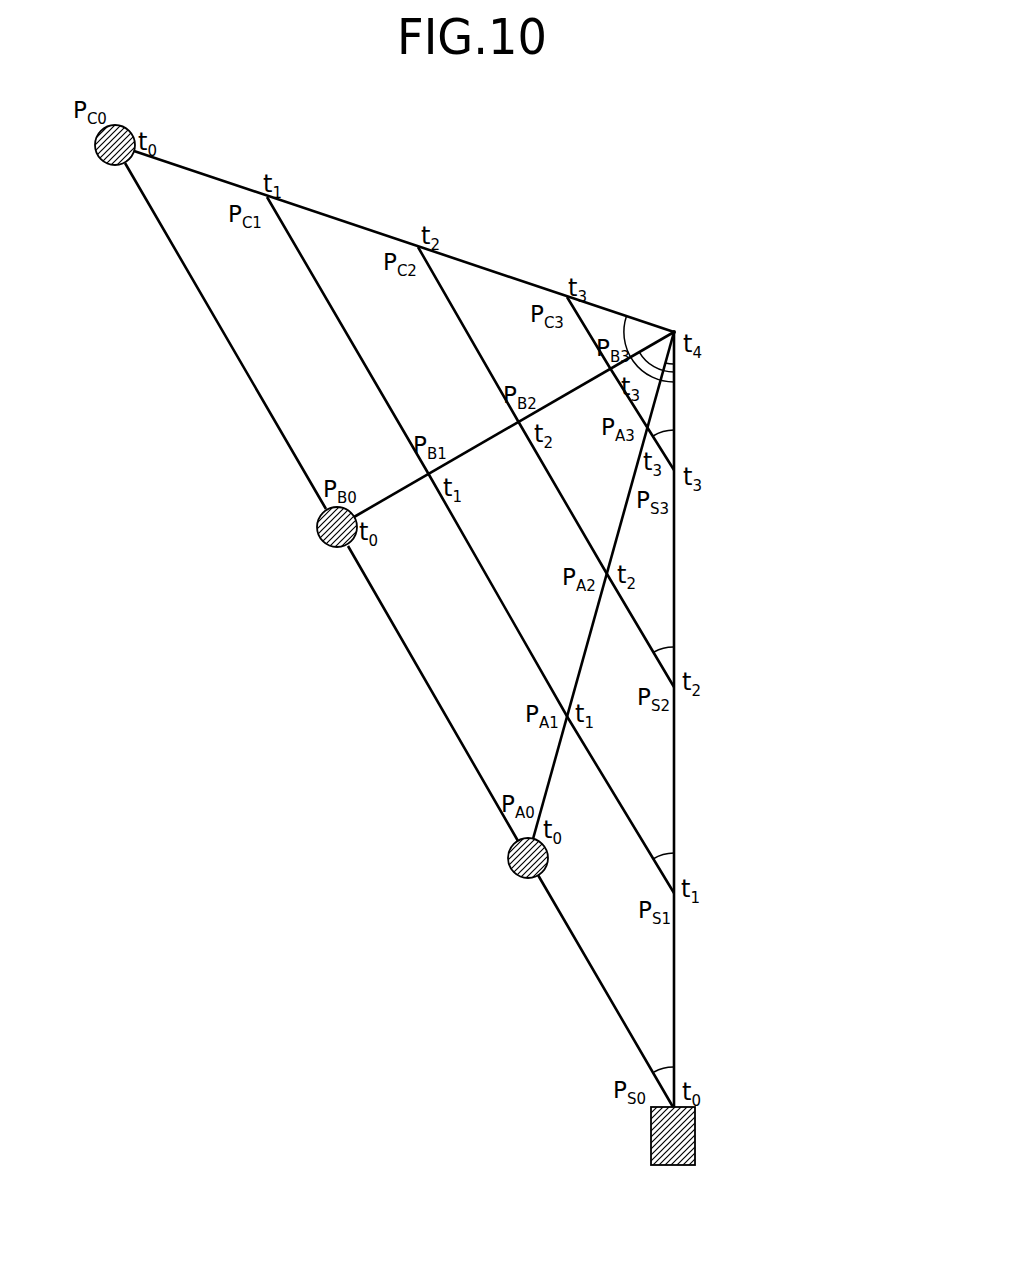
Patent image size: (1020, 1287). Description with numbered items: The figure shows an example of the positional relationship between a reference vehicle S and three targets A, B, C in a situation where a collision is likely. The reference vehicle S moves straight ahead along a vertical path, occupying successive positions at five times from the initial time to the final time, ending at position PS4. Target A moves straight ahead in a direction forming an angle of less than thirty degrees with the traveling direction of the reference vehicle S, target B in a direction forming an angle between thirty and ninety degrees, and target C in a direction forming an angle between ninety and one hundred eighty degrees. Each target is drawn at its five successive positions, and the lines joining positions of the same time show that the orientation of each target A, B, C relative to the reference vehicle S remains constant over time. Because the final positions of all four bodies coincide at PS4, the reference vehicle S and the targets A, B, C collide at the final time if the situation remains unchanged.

The target A is at (518, 868).
The target B is at (326, 535).
The target C is at (100, 145).
The reference vehicle S is at (673, 1154).
The position of the reference vehicle at time t4 PS4 is at (678, 325).